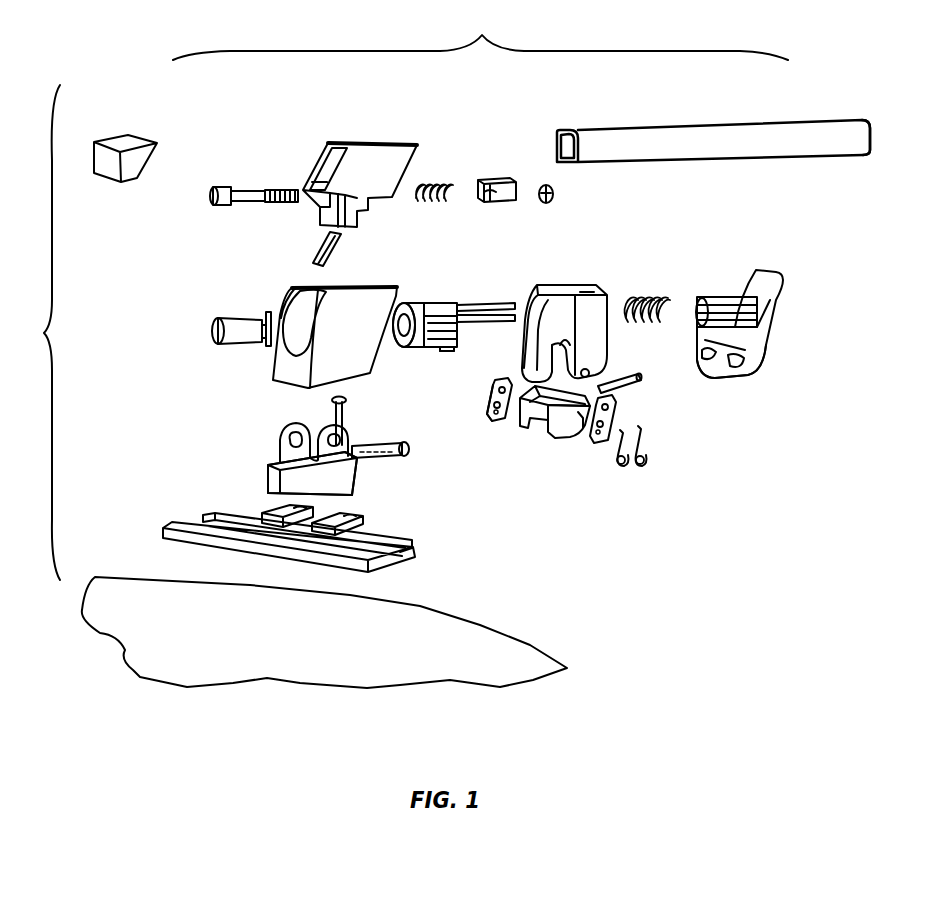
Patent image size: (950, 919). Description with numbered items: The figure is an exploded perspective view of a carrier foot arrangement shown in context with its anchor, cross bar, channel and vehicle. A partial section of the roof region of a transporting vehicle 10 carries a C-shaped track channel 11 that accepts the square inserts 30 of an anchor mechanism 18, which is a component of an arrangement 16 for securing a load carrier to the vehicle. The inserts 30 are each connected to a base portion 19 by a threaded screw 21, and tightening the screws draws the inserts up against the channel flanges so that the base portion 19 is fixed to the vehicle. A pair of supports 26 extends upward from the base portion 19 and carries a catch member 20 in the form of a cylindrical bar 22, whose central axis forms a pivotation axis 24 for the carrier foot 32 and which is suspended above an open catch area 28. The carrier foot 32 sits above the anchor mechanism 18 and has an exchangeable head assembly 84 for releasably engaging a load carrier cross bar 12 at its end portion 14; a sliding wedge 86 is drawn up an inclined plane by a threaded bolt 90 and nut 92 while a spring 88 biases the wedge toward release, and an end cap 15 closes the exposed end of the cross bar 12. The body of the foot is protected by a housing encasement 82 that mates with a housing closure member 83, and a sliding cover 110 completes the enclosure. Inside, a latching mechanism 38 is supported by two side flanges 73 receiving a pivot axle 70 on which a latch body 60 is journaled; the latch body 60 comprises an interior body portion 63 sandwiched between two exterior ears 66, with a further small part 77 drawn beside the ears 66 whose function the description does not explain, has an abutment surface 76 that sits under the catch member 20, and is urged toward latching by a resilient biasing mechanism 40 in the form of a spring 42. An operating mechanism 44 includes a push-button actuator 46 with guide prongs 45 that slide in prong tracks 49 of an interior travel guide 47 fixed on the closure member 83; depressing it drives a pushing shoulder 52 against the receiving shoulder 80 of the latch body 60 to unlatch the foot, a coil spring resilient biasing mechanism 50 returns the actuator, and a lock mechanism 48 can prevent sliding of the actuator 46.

The transporting vehicle 10 is at (296, 650).
The track channel 11 is at (258, 547).
The load carrier cross bar 12 is at (705, 143).
The end portion 14 is at (803, 175).
The end cap 15 is at (120, 138).
The arrangement 16 is at (36, 332).
The anchor mechanism 18 is at (228, 450).
The base portion 19 is at (272, 482).
The catch member 20 is at (398, 440).
The threaded screw 21 is at (330, 416).
The cylindrical bar 22 is at (375, 456).
The pivotation axis 24 is at (412, 452).
The supports 26 is at (275, 425).
The catch area 28 is at (290, 450).
The inserts 30 is at (365, 516).
The load carrier foot 32 is at (480, 35).
The latching mechanism 38 is at (626, 268).
The resilient biasing mechanism 40 is at (643, 478).
The spring 42 is at (653, 440).
The operating mechanism 44 is at (438, 298).
The guide prongs 45 is at (493, 298).
The push-button actuator 46 is at (405, 327).
The interior travel guide 47 is at (757, 322).
The lock mechanism 48 is at (205, 328).
The prong tracks 49 is at (768, 290).
The resilient biasing mechanism 50 is at (655, 293).
The pushing shoulder 52 is at (458, 346).
The latch body 60 is at (560, 454).
The interior body portion 63 is at (522, 420).
The exterior ears 66 is at (492, 412).
The pivot axle 70 is at (623, 383).
The side flanges 73 is at (598, 344).
The abutment surface 76 is at (553, 418).
The plate 77 is at (487, 402).
The receiving shoulder 80 is at (606, 407).
The housing encasement 82 is at (280, 298).
The housing closure member 83 is at (762, 365).
The exchangeable head assembly 84 is at (202, 232).
The sliding wedge 86 is at (494, 176).
The spring 88 is at (435, 207).
The threaded bolt 90 is at (250, 192).
The nut 92 is at (556, 200).
The sliding cover 110 is at (311, 255).